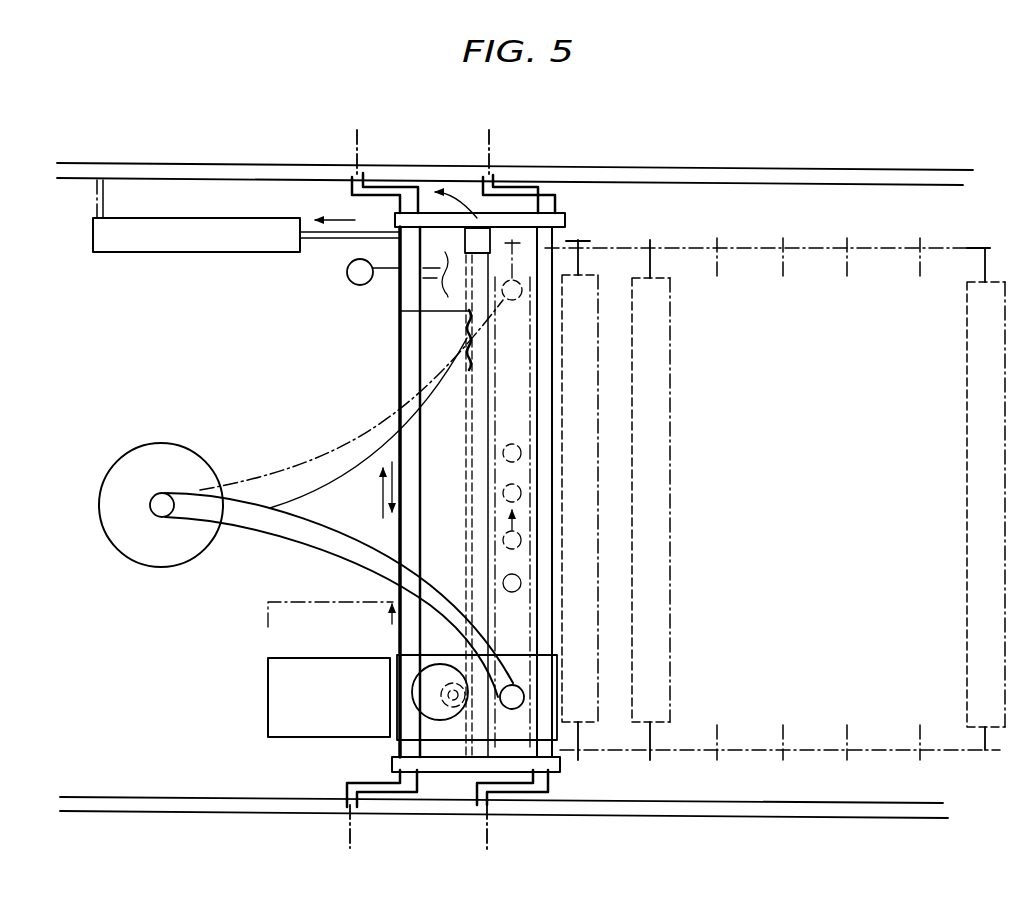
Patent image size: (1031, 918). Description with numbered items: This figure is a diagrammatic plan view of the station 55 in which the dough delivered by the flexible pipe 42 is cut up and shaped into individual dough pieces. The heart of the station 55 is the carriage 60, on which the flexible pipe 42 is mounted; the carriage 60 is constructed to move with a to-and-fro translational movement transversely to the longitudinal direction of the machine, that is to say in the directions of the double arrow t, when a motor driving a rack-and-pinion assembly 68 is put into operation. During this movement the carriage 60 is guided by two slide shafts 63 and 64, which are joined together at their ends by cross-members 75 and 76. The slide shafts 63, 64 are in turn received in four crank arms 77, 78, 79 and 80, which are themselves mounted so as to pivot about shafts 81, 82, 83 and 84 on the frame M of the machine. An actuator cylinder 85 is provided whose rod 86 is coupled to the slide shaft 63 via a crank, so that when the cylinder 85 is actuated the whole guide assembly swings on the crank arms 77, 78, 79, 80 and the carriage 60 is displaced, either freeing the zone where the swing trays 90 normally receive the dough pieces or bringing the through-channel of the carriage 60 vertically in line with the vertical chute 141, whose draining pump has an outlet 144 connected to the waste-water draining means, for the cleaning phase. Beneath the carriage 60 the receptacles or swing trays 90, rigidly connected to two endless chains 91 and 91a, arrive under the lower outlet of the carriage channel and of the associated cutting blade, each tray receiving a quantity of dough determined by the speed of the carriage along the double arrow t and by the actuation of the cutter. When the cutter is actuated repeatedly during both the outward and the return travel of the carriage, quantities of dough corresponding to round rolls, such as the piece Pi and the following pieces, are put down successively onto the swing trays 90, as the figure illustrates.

The flexible pipe 42 is at (303, 518).
The station for cutting up and shaping 55 is at (594, 161).
The carriage 60 is at (270, 712).
The slide shaft 63 is at (400, 360).
The slide shaft 64 is at (572, 236).
The rack-and-pinion assembly 68 is at (400, 311).
The cross-member 75 is at (438, 772).
The cross-member 76 is at (428, 215).
The crank arm 77 is at (383, 790).
The crank arm 78 is at (538, 800).
The crank arm 79 is at (387, 193).
The crank arm 80 is at (517, 192).
The pivot shaft 81 is at (350, 830).
The pivot shaft 82 is at (488, 830).
The pivot shaft 83 is at (357, 150).
The pivot shaft 84 is at (491, 141).
The actuator cylinder 85 is at (237, 238).
The rod 86 is at (338, 237).
The swing trays 90 is at (536, 633).
The endless chain 91 is at (878, 752).
The endless chain 91a is at (883, 247).
The vertical chute 141 is at (393, 278).
The outlet 144 is at (397, 285).
The frame M is at (842, 172).
The double arrow t is at (397, 497).
The round roll dough piece Pi is at (521, 585).